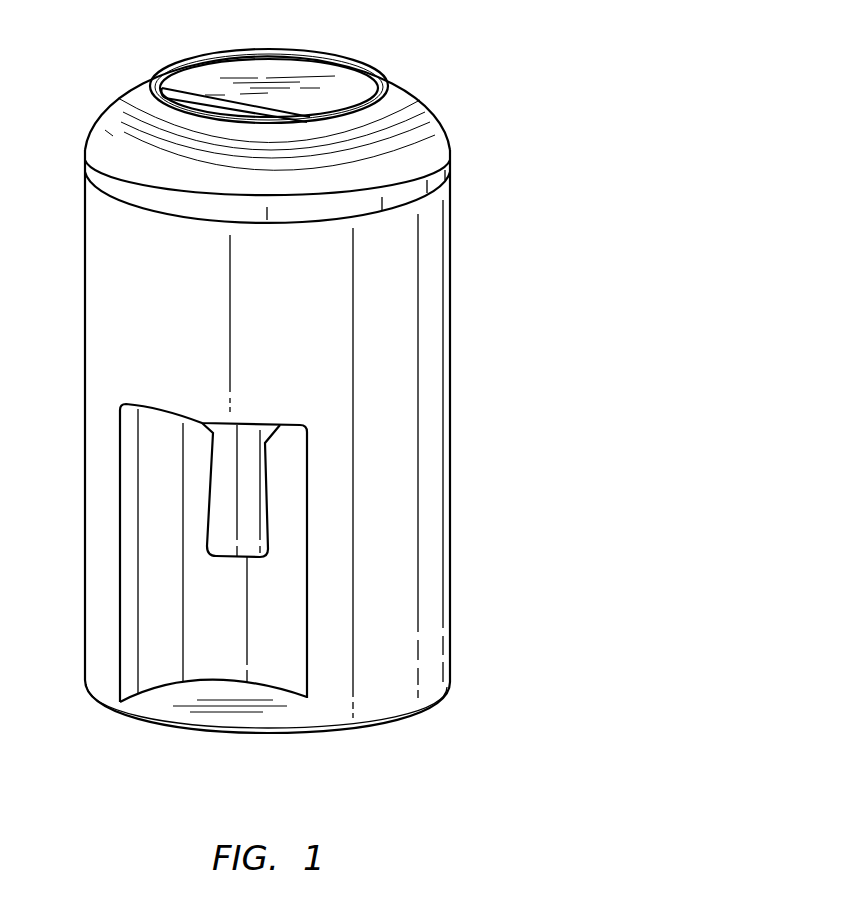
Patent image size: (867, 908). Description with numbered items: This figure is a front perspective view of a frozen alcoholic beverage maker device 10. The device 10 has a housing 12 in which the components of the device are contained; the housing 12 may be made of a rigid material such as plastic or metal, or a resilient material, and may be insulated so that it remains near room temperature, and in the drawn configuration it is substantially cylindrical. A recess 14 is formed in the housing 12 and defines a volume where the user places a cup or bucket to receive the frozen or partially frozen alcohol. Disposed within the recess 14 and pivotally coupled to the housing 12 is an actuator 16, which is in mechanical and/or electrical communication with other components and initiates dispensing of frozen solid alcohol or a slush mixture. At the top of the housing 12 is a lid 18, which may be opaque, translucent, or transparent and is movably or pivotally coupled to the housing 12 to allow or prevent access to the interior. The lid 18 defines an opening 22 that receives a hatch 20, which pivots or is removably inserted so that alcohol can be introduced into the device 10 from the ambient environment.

The frozen alcoholic beverage maker device 10 is at (485, 93).
The housing 12 is at (452, 315).
The recess 14 is at (264, 653).
The actuator 16 is at (220, 533).
The lid 18 is at (420, 160).
The hatch 20 is at (223, 80).
The opening 22 is at (348, 97).